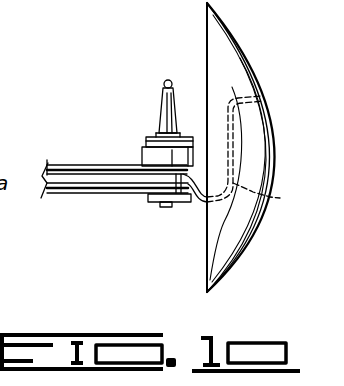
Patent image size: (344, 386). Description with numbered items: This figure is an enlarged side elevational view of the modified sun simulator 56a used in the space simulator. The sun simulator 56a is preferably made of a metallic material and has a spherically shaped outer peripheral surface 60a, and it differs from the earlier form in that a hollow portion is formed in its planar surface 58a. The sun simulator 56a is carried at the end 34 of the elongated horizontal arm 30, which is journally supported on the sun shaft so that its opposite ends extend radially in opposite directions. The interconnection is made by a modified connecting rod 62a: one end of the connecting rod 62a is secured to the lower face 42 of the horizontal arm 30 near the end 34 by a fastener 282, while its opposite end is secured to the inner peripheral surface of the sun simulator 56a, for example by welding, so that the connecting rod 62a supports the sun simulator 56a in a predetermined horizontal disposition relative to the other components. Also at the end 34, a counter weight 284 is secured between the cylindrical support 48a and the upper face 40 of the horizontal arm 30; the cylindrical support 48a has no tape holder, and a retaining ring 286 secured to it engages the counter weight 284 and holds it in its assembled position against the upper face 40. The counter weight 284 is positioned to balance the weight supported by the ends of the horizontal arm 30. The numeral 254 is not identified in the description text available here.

The sun simulator 56a is at (207, 17).
The planar surface 58a is at (207, 267).
The spherically shaped outer peripheral surface 60a is at (245, 44).
The connecting rod 62a is at (263, 154).
The retaining ring 286 is at (180, 137).
The cylindrical support 48a is at (163, 112).
The counter weight 284 is at (153, 153).
The upper face 40 is at (82, 165).
The lower face 42 is at (95, 192).
The horizontal arm 30 is at (78, 180).
The fastener 282 is at (165, 199).
The end 34 is at (193, 203).
The member 254 is at (15, 241).